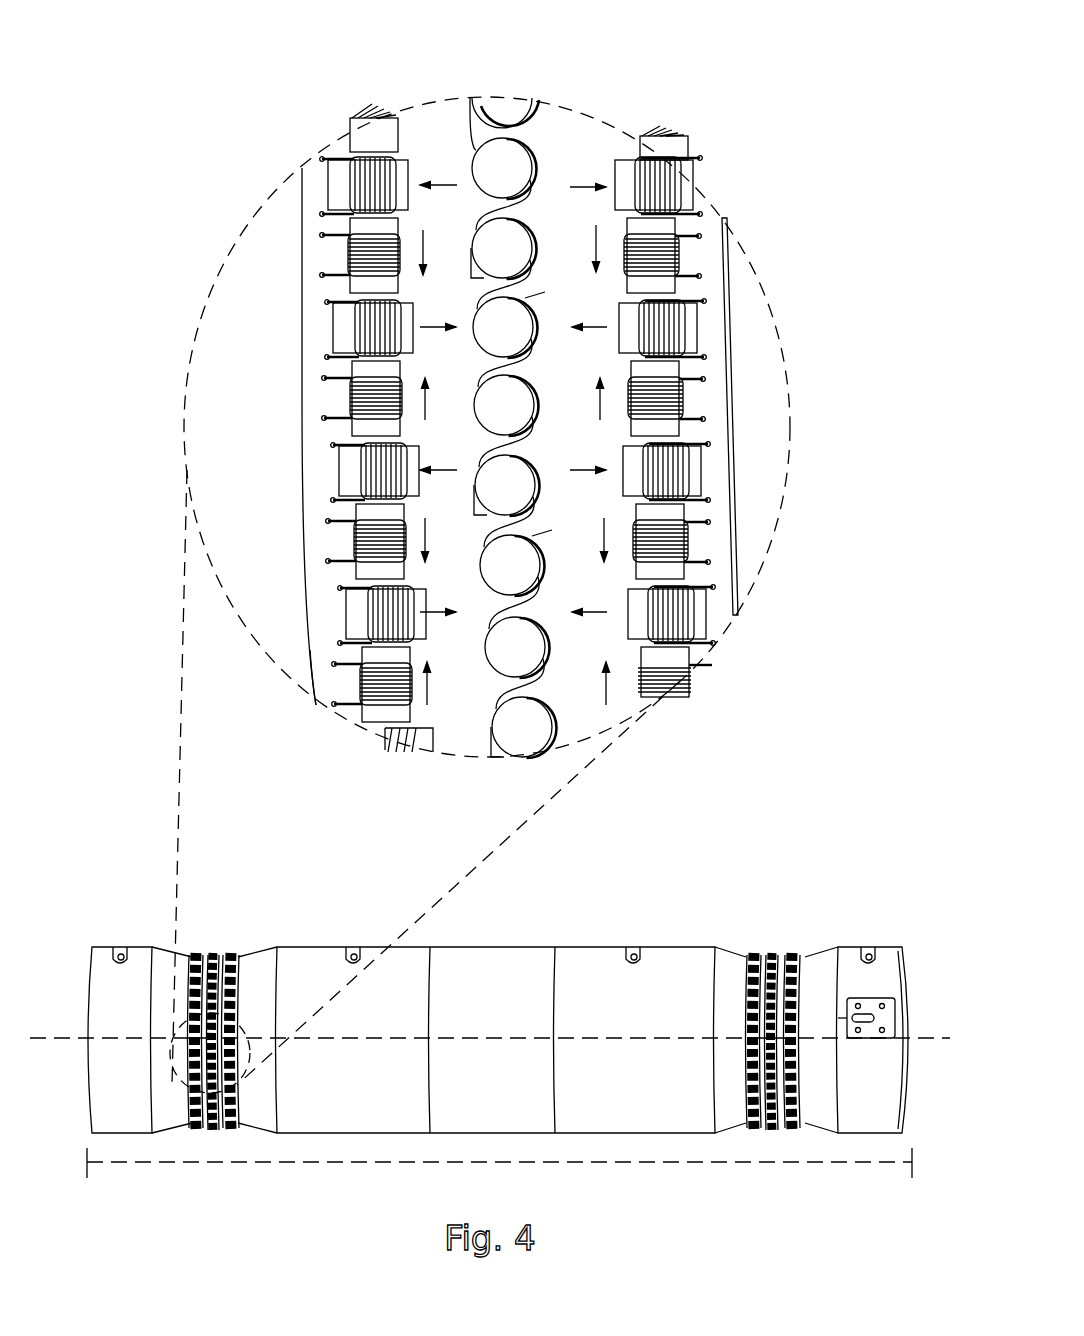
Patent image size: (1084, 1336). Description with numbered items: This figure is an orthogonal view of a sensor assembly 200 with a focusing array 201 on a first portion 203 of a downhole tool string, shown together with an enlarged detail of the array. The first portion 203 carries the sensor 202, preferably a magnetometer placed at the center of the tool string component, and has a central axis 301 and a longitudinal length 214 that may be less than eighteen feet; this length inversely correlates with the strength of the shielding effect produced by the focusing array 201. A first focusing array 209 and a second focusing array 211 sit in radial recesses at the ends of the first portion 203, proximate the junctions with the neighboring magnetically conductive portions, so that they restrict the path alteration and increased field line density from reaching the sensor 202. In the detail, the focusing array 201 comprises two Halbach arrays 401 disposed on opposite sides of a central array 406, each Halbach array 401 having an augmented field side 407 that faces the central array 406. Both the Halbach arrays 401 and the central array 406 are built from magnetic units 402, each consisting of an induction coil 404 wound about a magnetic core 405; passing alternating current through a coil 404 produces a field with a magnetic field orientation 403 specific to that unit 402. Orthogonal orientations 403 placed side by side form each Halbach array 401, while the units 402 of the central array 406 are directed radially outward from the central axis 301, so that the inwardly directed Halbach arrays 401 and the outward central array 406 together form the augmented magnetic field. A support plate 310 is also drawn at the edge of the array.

The sensor assembly 200 is at (106, 796).
The focusing array 201 is at (206, 933).
The sensor 202 is at (514, 932).
The first portion 203 is at (886, 933).
The first focusing array 209 is at (236, 938).
The second focusing array 211 is at (772, 938).
The longitudinal length 214 is at (282, 1179).
The central axis 301 is at (60, 1006).
The support plate 310 is at (327, 707).
The Halbach array 401 is at (366, 100).
The magnetic unit 402 is at (715, 260).
The magnetic field orientation 403 is at (607, 534).
The induction coil 404 is at (365, 318).
The magnetic core 405 is at (358, 613).
The central array 406 is at (495, 88).
The augmented field side 407 is at (440, 138).